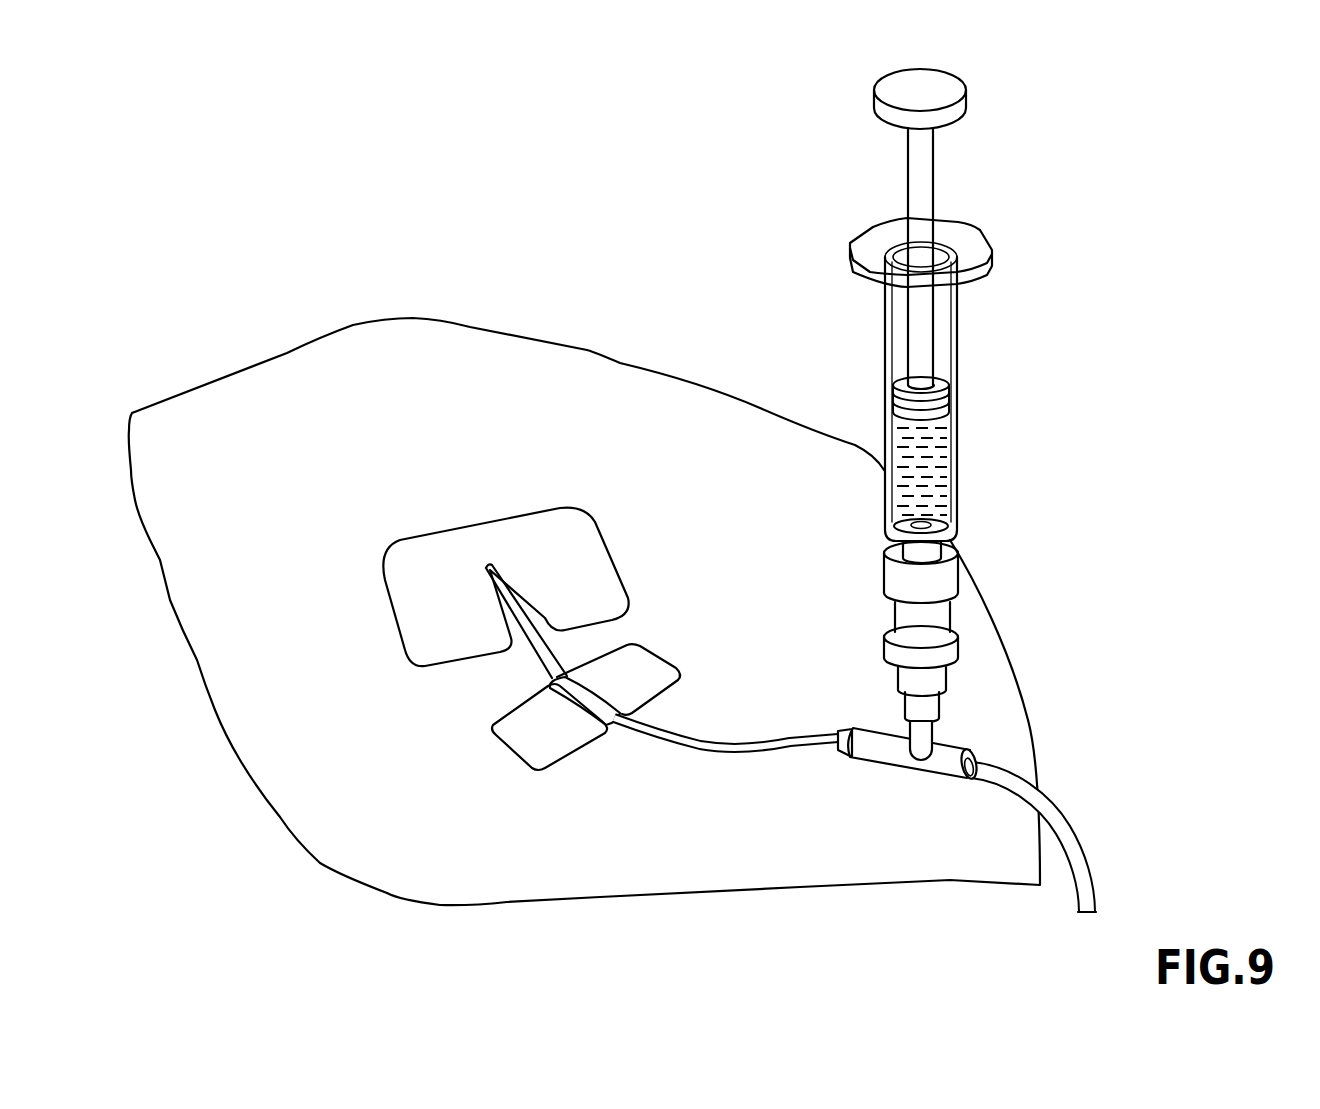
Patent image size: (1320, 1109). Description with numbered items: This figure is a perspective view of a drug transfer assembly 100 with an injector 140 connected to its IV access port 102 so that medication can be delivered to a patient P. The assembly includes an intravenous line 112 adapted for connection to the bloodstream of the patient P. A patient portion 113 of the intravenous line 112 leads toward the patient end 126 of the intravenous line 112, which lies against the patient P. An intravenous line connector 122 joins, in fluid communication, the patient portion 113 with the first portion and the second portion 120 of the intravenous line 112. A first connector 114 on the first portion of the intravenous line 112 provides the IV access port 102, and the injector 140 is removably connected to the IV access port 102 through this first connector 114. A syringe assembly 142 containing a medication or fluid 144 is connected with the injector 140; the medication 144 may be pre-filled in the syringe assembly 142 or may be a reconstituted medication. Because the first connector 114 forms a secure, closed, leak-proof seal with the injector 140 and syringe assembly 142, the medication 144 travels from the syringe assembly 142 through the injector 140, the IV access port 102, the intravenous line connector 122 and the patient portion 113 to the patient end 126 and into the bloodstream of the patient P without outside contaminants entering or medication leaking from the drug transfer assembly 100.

The drug transfer assembly 100 is at (897, 490).
The IV access port 102 is at (893, 655).
The intravenous line 112 is at (750, 752).
The patient portion of intravenous line 113 is at (530, 655).
The first connector 114 is at (900, 673).
The second portion of intravenous line 120 is at (1083, 857).
The intravenous line connector 122 is at (887, 748).
The patient end of intravenous line 126 is at (375, 605).
The injector 140 is at (947, 583).
The syringe assembly 142 is at (948, 316).
The medication 144 is at (935, 467).
The patient P is at (335, 837).